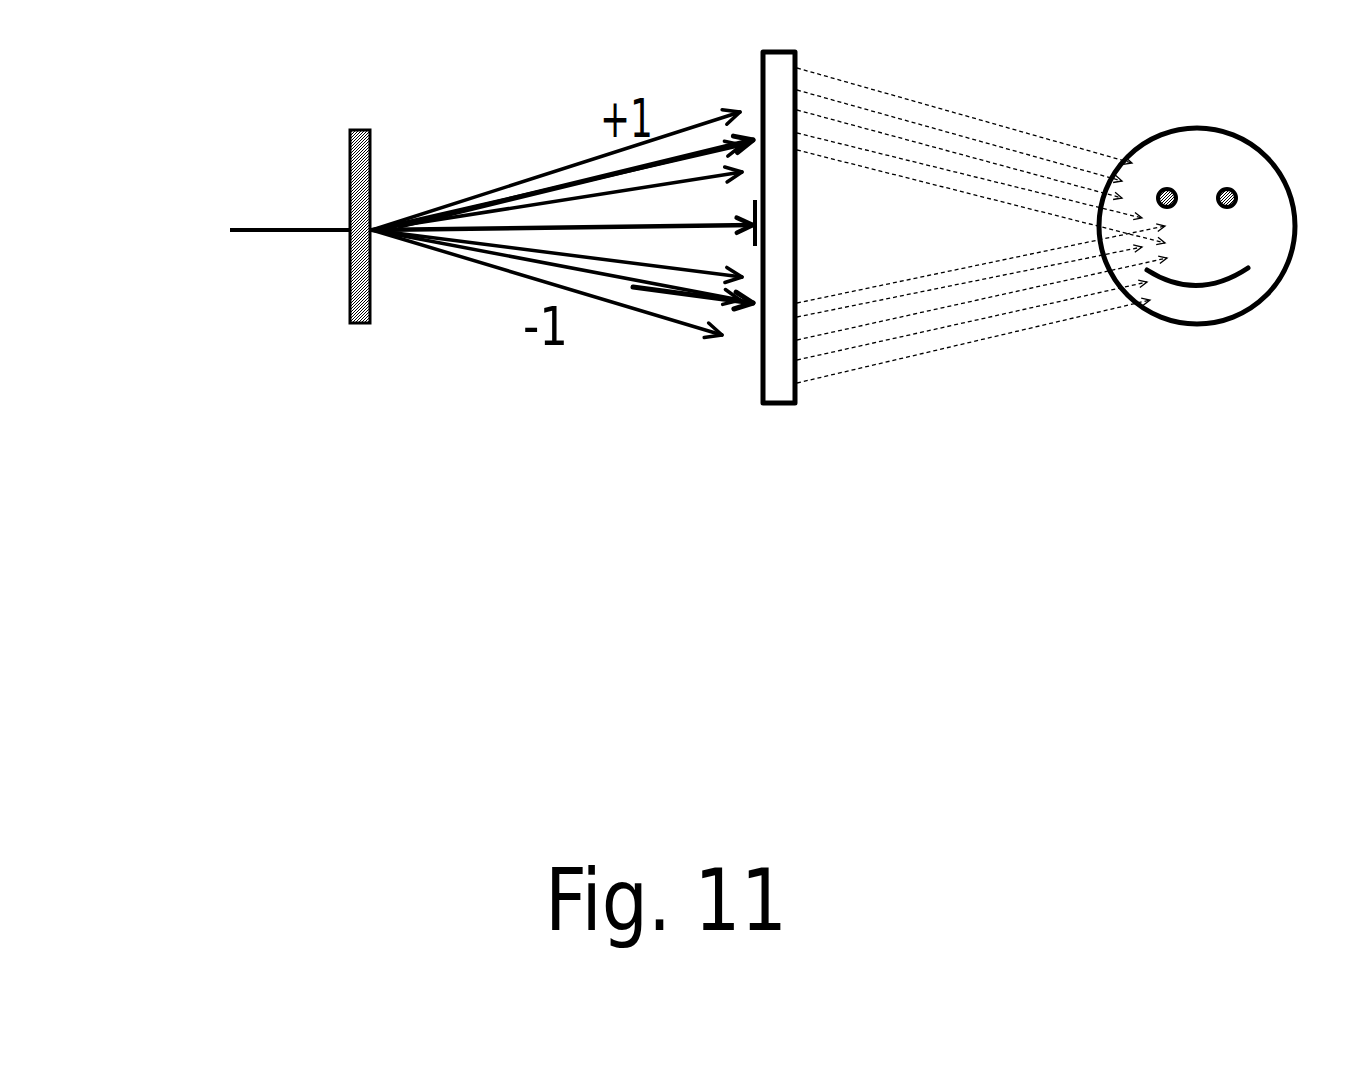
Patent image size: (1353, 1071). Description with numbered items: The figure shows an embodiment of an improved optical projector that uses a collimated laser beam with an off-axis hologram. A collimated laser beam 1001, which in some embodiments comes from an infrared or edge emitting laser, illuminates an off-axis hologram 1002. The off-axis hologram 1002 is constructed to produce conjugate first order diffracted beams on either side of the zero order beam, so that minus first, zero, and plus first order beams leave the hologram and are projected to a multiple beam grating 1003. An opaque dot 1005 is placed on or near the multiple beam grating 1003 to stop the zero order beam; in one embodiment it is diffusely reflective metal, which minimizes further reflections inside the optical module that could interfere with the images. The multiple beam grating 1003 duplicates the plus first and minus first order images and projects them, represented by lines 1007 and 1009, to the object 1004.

The collimated laser beam 1001 is at (270, 237).
The off-axis hologram 1002 is at (377, 167).
The multiple beam grating 1003 is at (797, 357).
The object 1004 is at (1205, 325).
The opaque dot 1005 is at (755, 232).
The lines 1007 is at (1003, 145).
The lines 1009 is at (1043, 303).